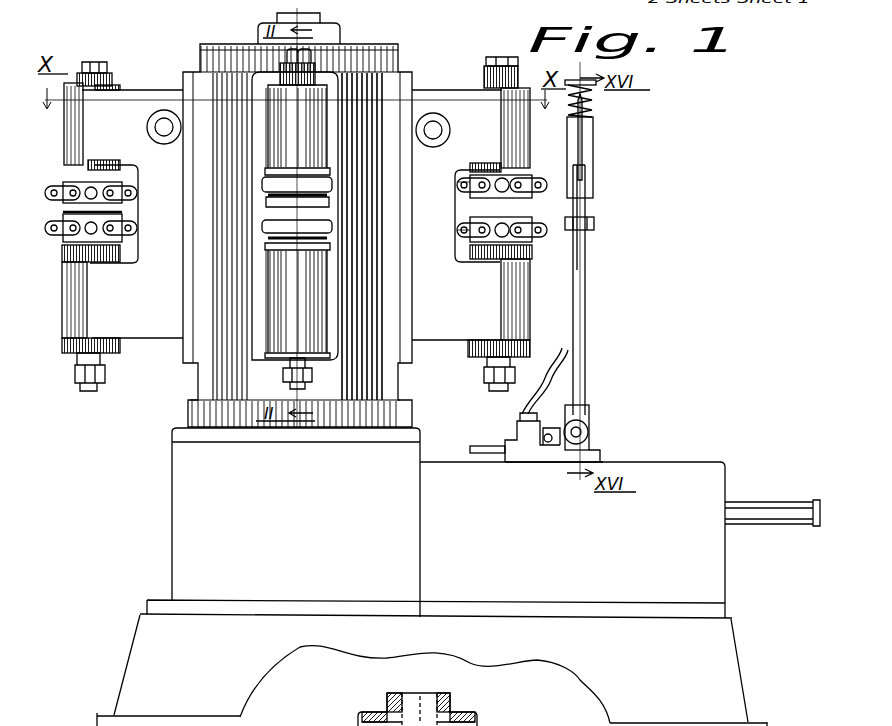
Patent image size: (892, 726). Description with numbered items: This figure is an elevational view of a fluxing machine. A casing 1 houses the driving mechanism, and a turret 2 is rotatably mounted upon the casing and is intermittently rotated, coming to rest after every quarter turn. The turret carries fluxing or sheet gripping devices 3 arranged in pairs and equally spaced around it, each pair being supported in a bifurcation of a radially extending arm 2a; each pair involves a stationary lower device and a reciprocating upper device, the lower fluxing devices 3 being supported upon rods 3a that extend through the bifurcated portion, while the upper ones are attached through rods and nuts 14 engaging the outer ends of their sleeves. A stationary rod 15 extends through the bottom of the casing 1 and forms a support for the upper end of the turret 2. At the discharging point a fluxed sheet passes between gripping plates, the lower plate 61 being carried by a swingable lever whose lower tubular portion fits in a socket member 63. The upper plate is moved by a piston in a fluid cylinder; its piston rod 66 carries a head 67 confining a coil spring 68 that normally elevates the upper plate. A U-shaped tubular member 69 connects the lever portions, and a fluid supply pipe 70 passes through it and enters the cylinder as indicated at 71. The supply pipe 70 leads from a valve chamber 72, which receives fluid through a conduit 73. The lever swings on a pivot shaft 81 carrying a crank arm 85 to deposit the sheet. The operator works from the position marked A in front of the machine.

The casing 1 is at (432, 577).
The turret 2 is at (233, 375).
The radially extending arm 2a is at (297, 220).
The fluxing devices 3 is at (58, 226).
The rods 3a is at (500, 388).
The nuts 14 is at (100, 72).
The stationary rod 15 is at (426, 706).
The plate 61 is at (595, 222).
The socket member 63 is at (590, 418).
The rod 66 is at (457, 231).
The head 67 is at (578, 108).
The coil spring 68 is at (588, 118).
The U-shaped tubular member 69 is at (584, 257).
The fluid supply pipe 70 is at (545, 366).
The entry of supply pipe into fluid cylinder 71 is at (583, 158).
The valve chamber 72 is at (532, 448).
The conduit 73 is at (495, 453).
The pivot shaft 81 is at (588, 434).
The crank arm 85 is at (543, 428).
The operator position A is at (300, 523).